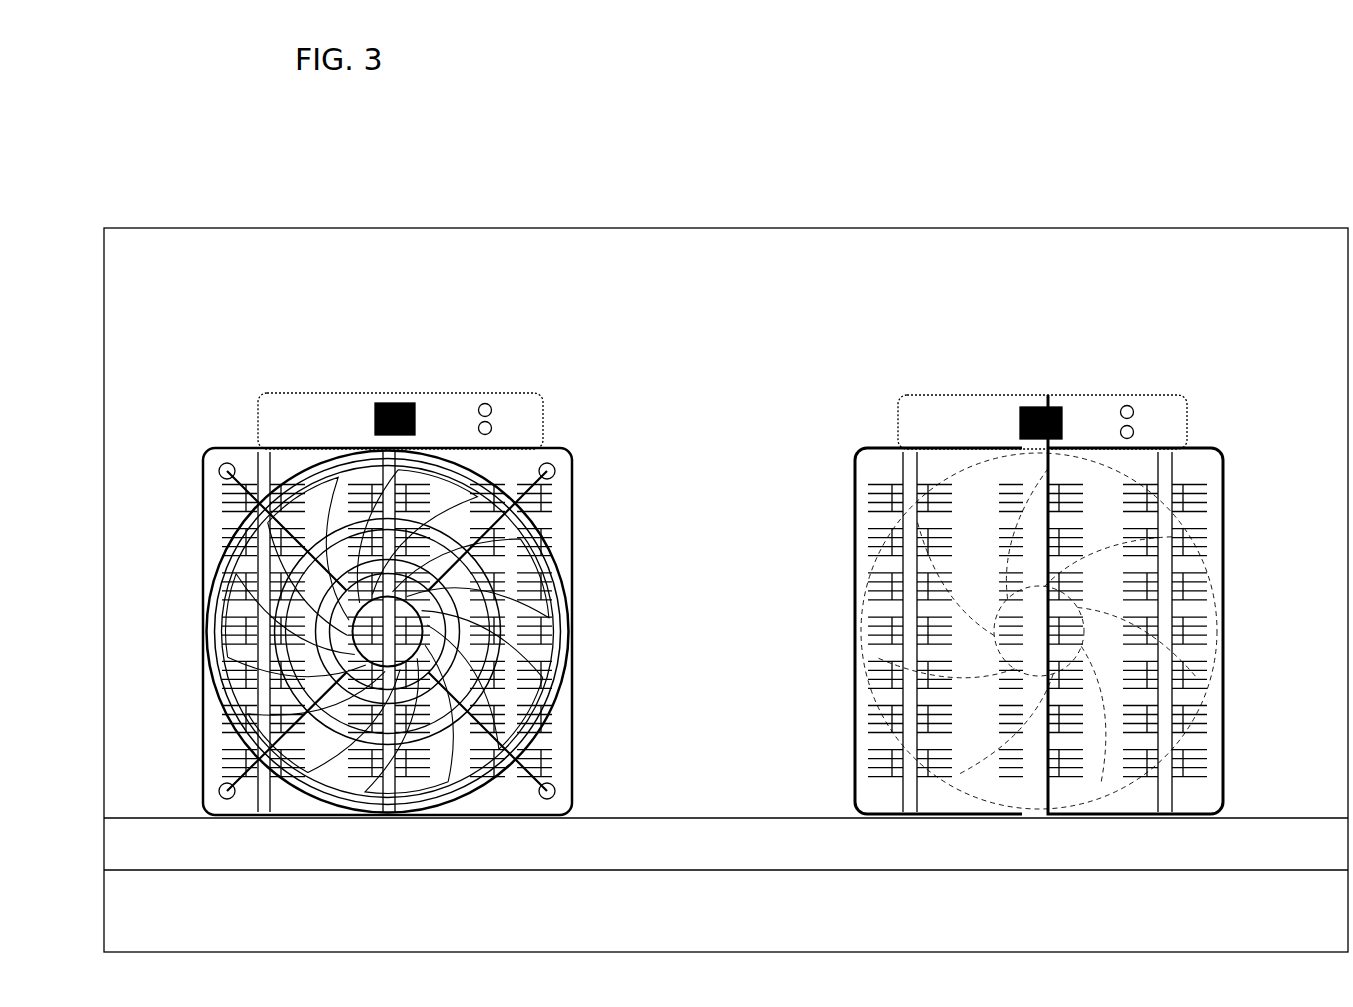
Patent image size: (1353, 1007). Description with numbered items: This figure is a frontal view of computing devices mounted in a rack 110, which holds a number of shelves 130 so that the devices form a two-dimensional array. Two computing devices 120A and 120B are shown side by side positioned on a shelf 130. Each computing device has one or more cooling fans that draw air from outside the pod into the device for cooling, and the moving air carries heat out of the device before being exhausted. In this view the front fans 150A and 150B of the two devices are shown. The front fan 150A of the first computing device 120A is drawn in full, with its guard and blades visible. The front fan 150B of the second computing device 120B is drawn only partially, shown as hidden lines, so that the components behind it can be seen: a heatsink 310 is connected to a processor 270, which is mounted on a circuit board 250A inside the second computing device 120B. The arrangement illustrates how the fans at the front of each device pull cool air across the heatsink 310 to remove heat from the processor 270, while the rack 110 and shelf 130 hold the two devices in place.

The rack 110 is at (750, 260).
The shelf 130 is at (750, 855).
The computing device 120A is at (436, 564).
The front fan 150A is at (500, 478).
The computing device 120B is at (1048, 568).
The front fan 150B is at (1173, 478).
The circuit board 250A is at (895, 621).
The heatsink 310 is at (903, 452).
The processor 270 is at (900, 512).